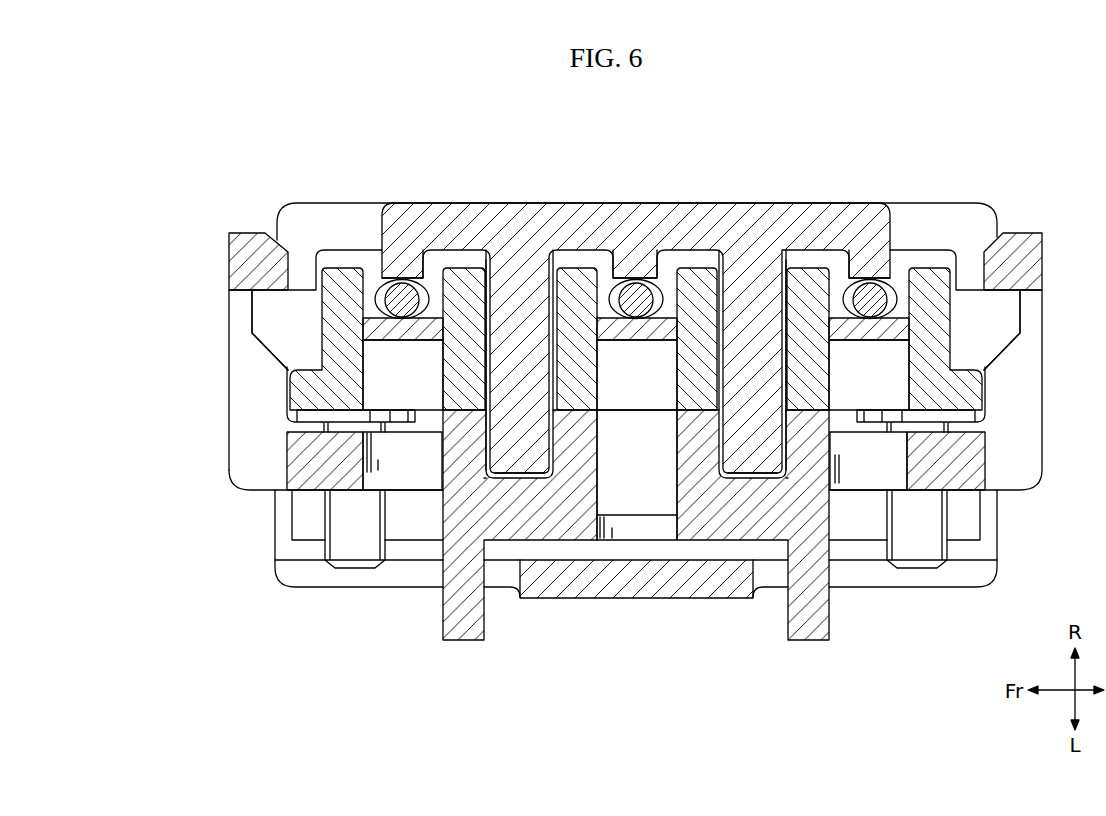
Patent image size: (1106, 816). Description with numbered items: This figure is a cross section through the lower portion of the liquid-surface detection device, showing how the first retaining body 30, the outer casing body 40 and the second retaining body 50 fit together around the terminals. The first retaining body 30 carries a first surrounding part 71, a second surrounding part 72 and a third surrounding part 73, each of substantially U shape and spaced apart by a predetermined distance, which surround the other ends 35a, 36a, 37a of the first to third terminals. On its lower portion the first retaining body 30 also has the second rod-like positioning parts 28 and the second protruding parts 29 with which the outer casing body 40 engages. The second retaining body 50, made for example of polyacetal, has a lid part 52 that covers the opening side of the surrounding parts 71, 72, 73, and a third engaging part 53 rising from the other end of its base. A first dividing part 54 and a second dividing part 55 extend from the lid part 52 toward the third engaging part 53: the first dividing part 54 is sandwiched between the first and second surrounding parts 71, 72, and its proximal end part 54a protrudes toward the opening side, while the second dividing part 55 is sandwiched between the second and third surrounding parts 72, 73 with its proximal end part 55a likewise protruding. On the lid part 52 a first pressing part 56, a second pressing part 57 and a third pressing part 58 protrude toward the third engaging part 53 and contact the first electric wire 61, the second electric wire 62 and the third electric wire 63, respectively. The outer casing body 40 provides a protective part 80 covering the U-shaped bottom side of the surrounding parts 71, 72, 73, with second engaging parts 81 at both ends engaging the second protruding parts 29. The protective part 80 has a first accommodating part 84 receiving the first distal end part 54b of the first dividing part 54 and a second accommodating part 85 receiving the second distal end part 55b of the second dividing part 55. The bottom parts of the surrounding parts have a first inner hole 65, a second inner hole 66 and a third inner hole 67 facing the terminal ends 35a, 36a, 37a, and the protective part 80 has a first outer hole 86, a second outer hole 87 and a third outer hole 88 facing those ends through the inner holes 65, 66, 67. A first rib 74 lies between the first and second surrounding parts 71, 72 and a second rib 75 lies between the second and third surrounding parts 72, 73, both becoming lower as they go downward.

The first retaining body 30 is at (955, 255).
The second engaging parts 81 is at (1042, 262).
The second protruding parts 29 is at (1000, 336).
The lid part 52 is at (398, 202).
The first pressing part 56 is at (405, 264).
The second pressing part 57 is at (634, 263).
The third pressing part 58 is at (861, 263).
The first dividing part 54 is at (526, 372).
The proximal end part of the first dividing part 54a is at (516, 345).
The first distal end part 54b is at (518, 433).
The second dividing part 55 is at (748, 372).
The proximal end part of the second dividing part 55a is at (752, 345).
The second distal end part 55b is at (744, 443).
The first electric wire 61 is at (414, 296).
The second electric wire 62 is at (650, 296).
The third electric wire 63 is at (882, 296).
The first surrounding part 71 is at (373, 291).
The second surrounding part 72 is at (637, 266).
The third surrounding part 73 is at (886, 277).
The other end of the first terminal 35a is at (408, 336).
The other end of the second terminal 36a is at (642, 336).
The other end of the third terminal 37a is at (873, 336).
The first inner hole 65 is at (364, 392).
The second inner hole 66 is at (600, 390).
The third inner hole 67 is at (831, 392).
The protective part 80 is at (600, 487).
The first outer hole 86 is at (367, 453).
The second outer hole 87 is at (673, 533).
The third outer hole 88 is at (832, 450).
The outer casing body 40 is at (598, 558).
The first rib 74 is at (461, 642).
The second rib 75 is at (809, 642).
The first accommodating part 84 is at (524, 460).
The second accommodating part 85 is at (749, 460).
The third engaging part 53 is at (613, 599).
The second retaining body 50 is at (609, 568).
The second rod-like positioning parts 28 is at (913, 552).